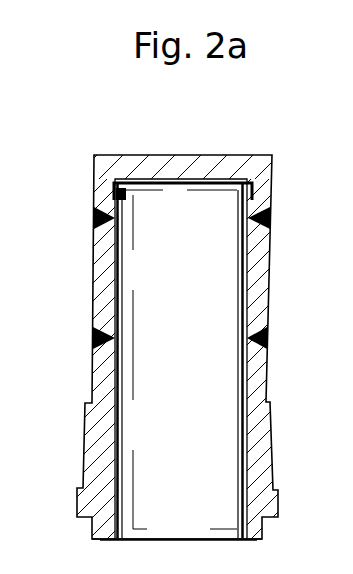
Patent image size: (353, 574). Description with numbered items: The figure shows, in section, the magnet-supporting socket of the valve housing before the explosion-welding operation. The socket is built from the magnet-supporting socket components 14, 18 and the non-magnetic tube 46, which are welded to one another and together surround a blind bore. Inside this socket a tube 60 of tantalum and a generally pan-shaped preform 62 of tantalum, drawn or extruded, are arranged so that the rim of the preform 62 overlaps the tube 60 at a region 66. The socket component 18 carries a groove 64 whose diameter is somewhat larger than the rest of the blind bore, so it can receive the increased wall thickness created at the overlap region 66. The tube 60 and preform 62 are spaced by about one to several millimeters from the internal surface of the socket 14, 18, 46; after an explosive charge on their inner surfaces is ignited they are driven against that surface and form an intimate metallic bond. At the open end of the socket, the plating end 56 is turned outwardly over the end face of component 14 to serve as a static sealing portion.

The magnet-supporting socket component 14 is at (275, 428).
The magnet-supporting socket component 18 is at (193, 160).
The non-magnetic tube 46 is at (258, 258).
The end of plating layer 56 is at (247, 538).
The tube 60 is at (124, 309).
The pan-shaped preform 62 is at (173, 187).
The groove 64 is at (250, 190).
The region of overlap 66 is at (118, 199).